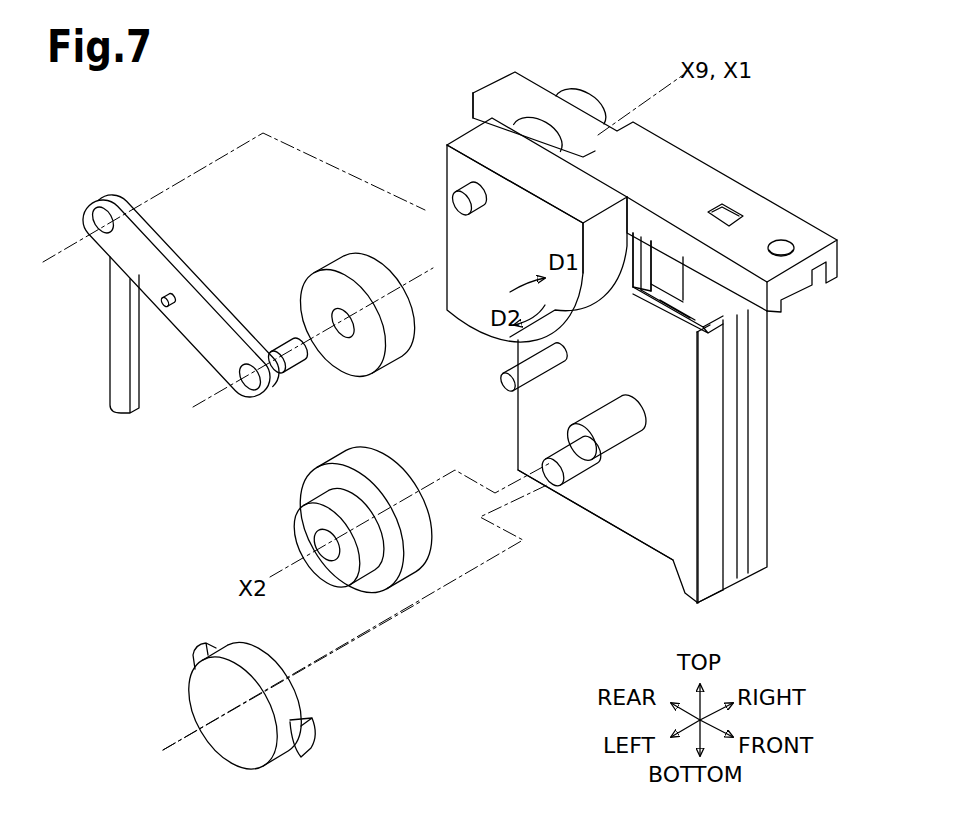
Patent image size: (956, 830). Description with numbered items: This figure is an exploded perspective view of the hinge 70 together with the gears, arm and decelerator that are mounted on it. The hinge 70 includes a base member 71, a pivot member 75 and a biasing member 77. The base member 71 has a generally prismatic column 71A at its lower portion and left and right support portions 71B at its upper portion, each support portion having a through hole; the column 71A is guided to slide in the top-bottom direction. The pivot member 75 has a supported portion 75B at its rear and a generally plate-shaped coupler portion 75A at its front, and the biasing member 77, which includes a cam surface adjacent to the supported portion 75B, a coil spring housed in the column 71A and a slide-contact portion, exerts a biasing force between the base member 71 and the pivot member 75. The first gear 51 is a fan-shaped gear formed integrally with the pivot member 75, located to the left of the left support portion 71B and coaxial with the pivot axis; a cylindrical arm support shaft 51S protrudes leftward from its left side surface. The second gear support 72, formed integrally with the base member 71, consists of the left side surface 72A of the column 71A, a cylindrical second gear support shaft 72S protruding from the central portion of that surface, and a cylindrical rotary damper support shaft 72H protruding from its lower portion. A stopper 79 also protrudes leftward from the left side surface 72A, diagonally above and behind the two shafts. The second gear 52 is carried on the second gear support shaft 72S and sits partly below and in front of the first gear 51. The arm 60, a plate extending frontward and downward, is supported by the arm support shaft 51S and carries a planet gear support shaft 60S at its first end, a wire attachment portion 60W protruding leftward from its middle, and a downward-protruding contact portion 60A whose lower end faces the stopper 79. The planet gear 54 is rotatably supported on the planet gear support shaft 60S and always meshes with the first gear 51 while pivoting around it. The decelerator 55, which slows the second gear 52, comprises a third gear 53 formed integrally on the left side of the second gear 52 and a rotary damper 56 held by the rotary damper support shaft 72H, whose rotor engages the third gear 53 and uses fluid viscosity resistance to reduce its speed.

The hinge 70 is at (366, 104).
The arm 60 is at (187, 261).
The contact portion 60A is at (117, 383).
The wire attachment portion 60W is at (167, 306).
The planet gear support shaft 60S is at (296, 361).
The planet gear 54 is at (340, 263).
The second gear 52 is at (386, 462).
The third gear 53 is at (302, 537).
The decelerator 55 is at (350, 676).
The rotary damper 56 is at (228, 742).
The first gear 51 is at (606, 238).
The arm support shaft 51S is at (455, 195).
The stopper 79 is at (502, 382).
The second gear support 72 is at (628, 508).
The left side surface 72A is at (665, 520).
The second gear support shaft 72S is at (586, 444).
The rotary damper support shaft 72H is at (547, 480).
The base member 71 is at (777, 513).
The column 71A is at (756, 425).
The support portions 71B is at (513, 118).
The pivot member 75 is at (801, 213).
The coupler portion 75A is at (726, 190).
The supported portion 75B is at (478, 116).
The biasing member 77 is at (658, 270).